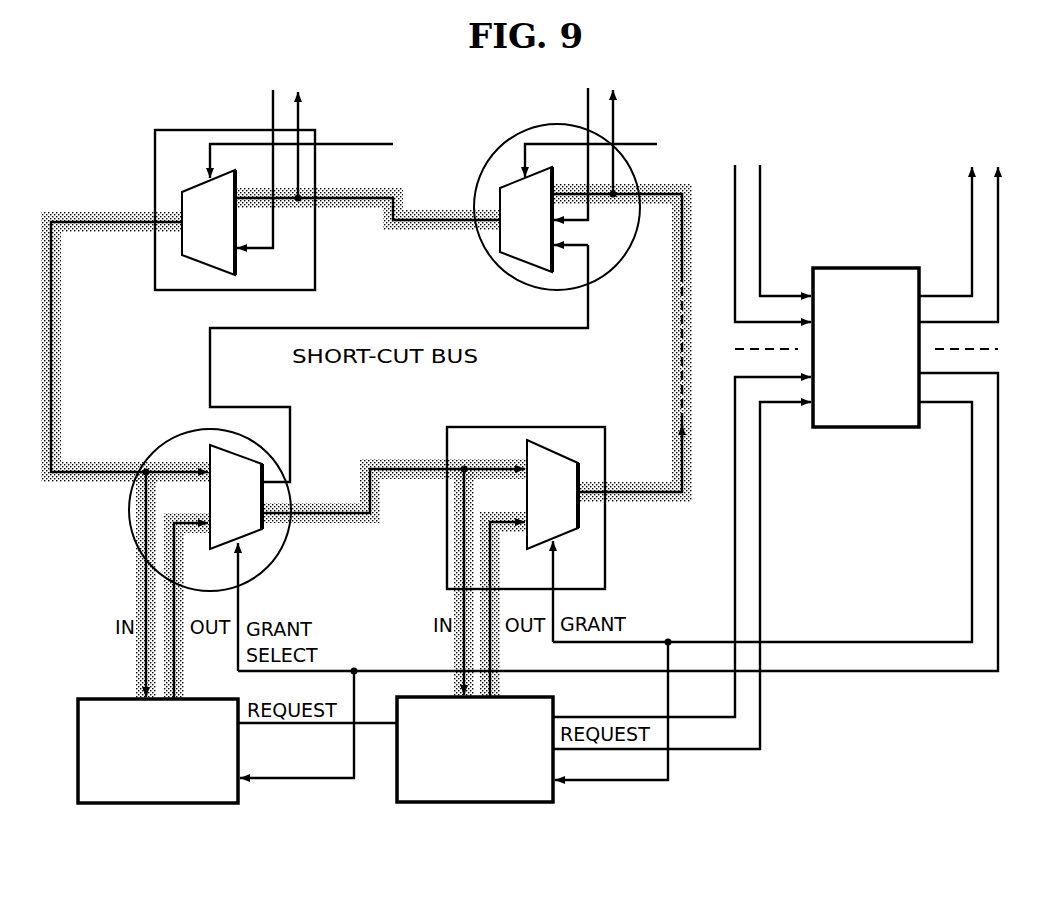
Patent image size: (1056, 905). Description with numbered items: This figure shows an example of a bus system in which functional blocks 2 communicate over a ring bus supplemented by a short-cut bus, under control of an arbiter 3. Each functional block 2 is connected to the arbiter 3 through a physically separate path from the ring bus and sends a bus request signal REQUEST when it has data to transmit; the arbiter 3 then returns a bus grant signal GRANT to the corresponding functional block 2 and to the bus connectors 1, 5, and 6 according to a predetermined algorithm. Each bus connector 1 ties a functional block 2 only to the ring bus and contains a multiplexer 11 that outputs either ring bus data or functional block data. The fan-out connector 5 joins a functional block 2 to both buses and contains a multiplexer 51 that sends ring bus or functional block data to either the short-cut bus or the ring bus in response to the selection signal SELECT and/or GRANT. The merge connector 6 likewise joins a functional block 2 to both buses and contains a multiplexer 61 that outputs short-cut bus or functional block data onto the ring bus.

The bus connector 1 is at (380, 331).
The multiplexer 11 is at (193, 186).
The functional block 2 is at (158, 806).
The arbiter 3 is at (862, 266).
The fan-out connector 5 is at (223, 496).
The multiplexer 51 is at (252, 537).
The merge connector 6 is at (543, 190).
The multiplexer 61 is at (512, 259).